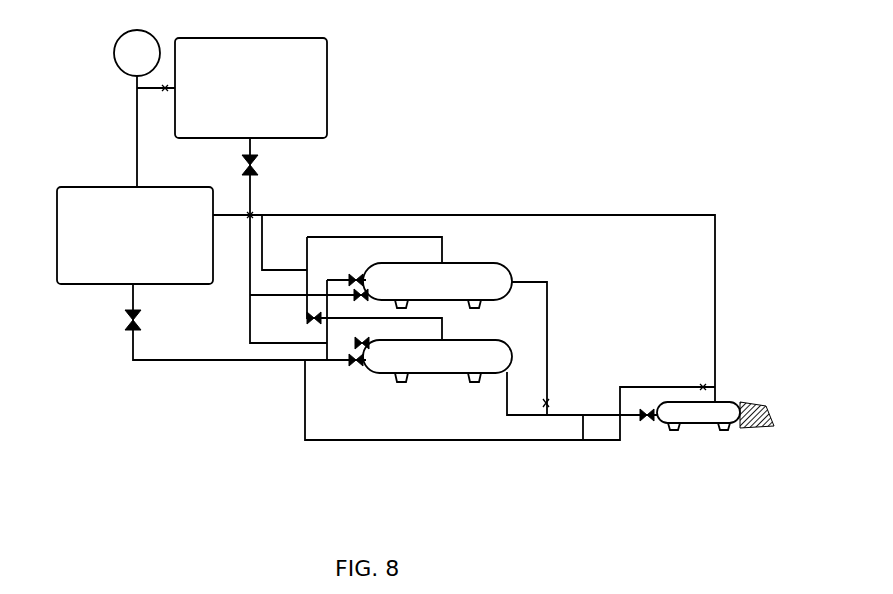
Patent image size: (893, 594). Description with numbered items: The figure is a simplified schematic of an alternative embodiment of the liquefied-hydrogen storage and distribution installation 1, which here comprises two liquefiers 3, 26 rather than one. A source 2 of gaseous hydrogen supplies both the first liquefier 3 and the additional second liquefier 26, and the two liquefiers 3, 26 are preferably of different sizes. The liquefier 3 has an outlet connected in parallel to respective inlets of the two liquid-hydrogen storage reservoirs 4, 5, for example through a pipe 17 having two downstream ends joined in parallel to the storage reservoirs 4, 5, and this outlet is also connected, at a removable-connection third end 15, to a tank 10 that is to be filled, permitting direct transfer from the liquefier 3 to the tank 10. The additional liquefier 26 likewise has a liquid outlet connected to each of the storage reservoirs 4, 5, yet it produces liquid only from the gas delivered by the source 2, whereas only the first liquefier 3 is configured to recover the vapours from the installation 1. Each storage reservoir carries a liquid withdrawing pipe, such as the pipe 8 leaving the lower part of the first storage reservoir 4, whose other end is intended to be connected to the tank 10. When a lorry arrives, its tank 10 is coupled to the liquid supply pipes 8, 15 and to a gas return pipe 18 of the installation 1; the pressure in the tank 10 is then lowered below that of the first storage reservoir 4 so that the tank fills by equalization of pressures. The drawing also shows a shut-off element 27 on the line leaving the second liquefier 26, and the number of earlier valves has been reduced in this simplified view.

The installation 1 is at (580, 77).
The source of gaseous hydrogen 2 is at (144, 62).
The liquefier 3 is at (141, 244).
The first storage reservoir 4 is at (434, 362).
The second storage reservoir 5 is at (467, 272).
The liquid withdrawing pipe 8 is at (583, 442).
The tank 10 is at (698, 424).
The removable-connection third end 15 is at (668, 380).
The pipe 17 is at (208, 362).
The gas return pipe 18 is at (716, 252).
The second liquefier 26 is at (261, 97).
The shut-off valve 27 is at (260, 166).